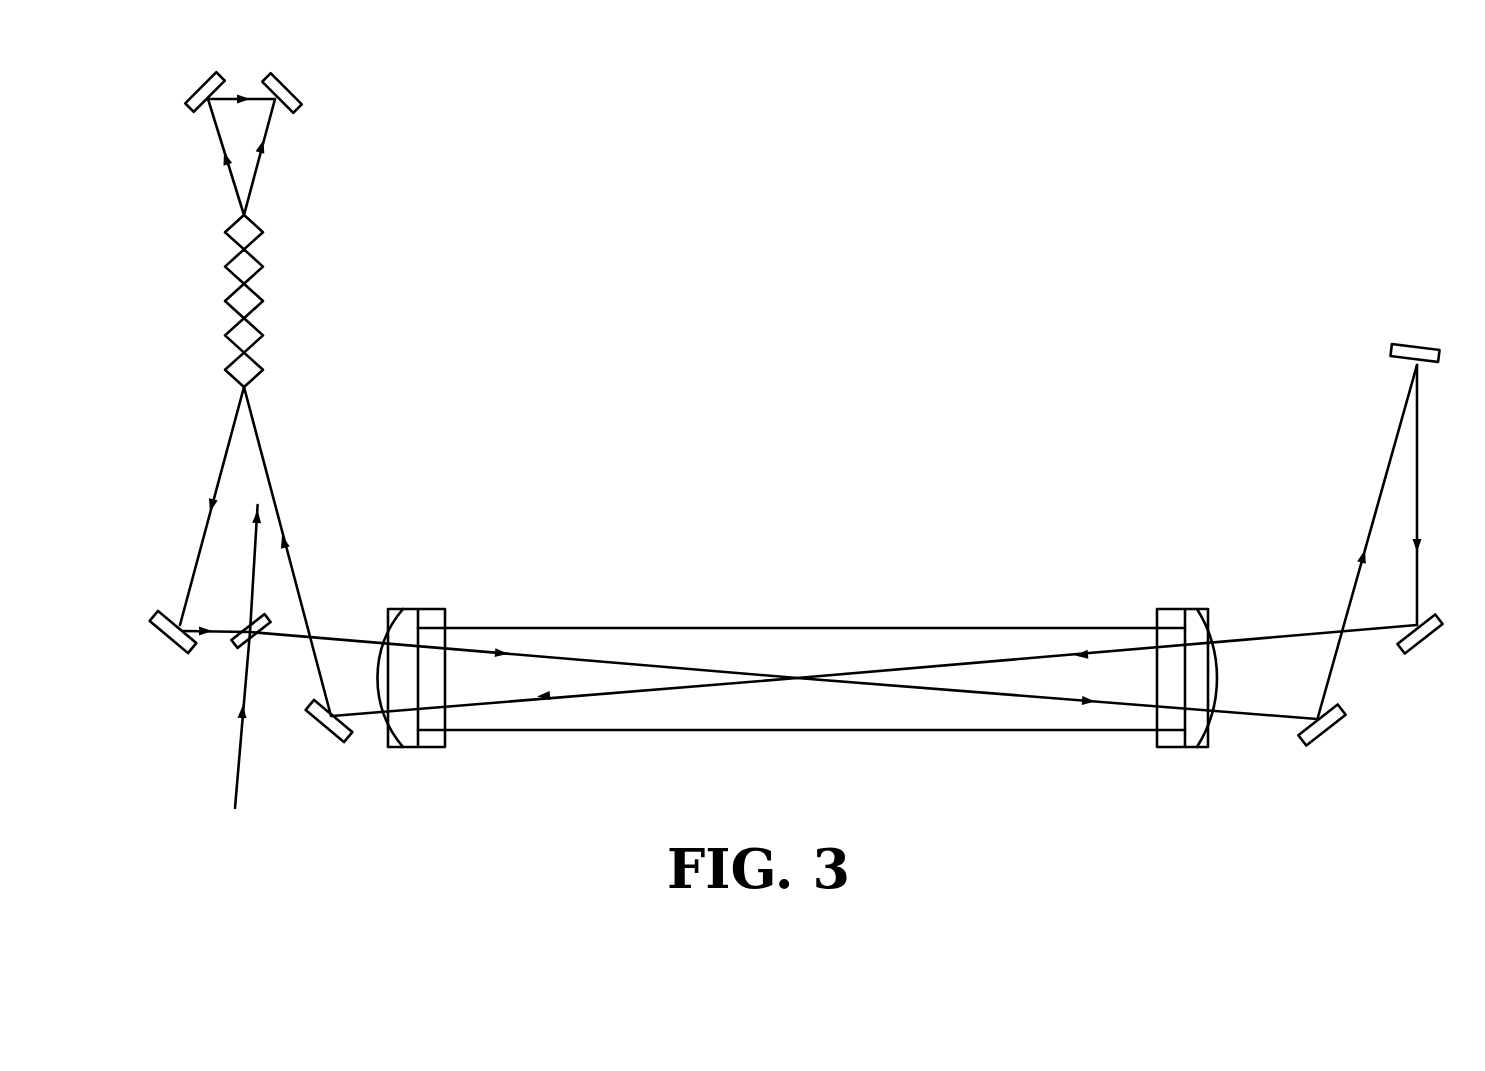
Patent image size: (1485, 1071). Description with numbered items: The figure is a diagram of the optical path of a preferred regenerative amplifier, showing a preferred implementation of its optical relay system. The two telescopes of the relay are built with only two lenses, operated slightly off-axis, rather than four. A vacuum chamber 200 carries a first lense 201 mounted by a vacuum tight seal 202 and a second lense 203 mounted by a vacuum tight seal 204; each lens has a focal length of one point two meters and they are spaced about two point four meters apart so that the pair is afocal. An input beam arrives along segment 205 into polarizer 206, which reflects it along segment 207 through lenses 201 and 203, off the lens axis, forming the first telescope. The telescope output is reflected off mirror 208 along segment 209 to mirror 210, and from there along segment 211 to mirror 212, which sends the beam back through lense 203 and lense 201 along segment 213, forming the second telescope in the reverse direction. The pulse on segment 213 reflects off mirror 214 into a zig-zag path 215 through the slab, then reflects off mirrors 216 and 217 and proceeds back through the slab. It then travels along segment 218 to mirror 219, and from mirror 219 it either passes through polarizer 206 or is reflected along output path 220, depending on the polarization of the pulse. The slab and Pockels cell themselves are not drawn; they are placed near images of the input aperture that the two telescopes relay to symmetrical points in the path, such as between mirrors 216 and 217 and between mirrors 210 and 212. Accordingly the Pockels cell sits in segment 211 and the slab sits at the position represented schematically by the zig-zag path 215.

The vacuum chamber 200 is at (797, 628).
The first lense 201 is at (402, 627).
The vacuum tight seal 202 is at (448, 615).
The second lense 203 is at (1210, 628).
The vacuum tight seal 204 is at (1162, 610).
The segment 205 is at (238, 770).
The polarizer 206 is at (232, 645).
The segment 207 is at (592, 658).
The mirror 208 is at (1330, 728).
The segment 209 is at (1375, 490).
The mirror 210 is at (1415, 347).
The segment 211 is at (1417, 512).
The mirror 212 is at (1423, 648).
The segment 213 is at (1042, 658).
The mirror 214 is at (320, 723).
The zig-zag path 215 is at (260, 298).
The mirror 216 is at (197, 95).
The mirror 217 is at (288, 92).
The segment 218 is at (218, 470).
The mirror 219 is at (162, 633).
The output path 220 is at (247, 575).